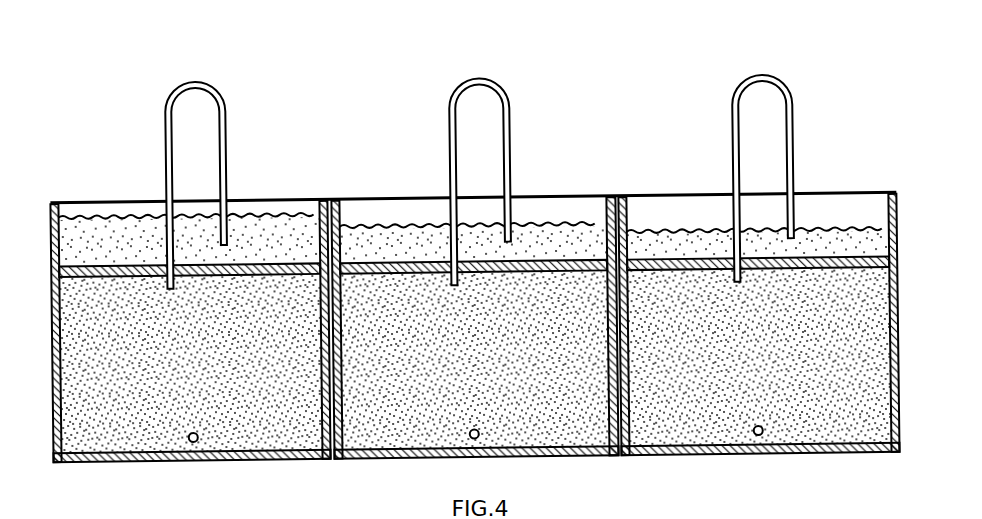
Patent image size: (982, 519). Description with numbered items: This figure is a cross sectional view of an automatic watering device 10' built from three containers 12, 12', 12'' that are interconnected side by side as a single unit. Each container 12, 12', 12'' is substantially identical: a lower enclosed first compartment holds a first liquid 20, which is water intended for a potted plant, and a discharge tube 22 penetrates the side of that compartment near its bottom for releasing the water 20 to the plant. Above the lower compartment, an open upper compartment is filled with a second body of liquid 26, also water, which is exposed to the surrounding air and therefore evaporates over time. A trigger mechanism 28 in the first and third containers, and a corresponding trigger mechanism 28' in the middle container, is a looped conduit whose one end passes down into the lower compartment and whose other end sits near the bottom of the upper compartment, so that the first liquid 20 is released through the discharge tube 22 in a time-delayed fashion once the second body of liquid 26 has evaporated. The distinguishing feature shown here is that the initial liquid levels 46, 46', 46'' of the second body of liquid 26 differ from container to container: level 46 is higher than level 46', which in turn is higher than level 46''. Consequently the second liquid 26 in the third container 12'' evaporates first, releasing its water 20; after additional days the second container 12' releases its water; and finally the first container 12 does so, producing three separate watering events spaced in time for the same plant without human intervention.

The automatic watering device 10' is at (465, 268).
The container 12 is at (180, 318).
The container 12' is at (474, 305).
The container 12'' is at (757, 300).
The first liquid 20 is at (107, 410).
The discharge tube 22 is at (190, 442).
The second body of liquid 26 is at (150, 231).
The trigger mechanism 28 is at (456, 162).
The trigger mechanism 28' is at (480, 162).
The liquid level 46 is at (183, 171).
The liquid level 46' is at (467, 166).
The liquid level 46'' is at (754, 165).